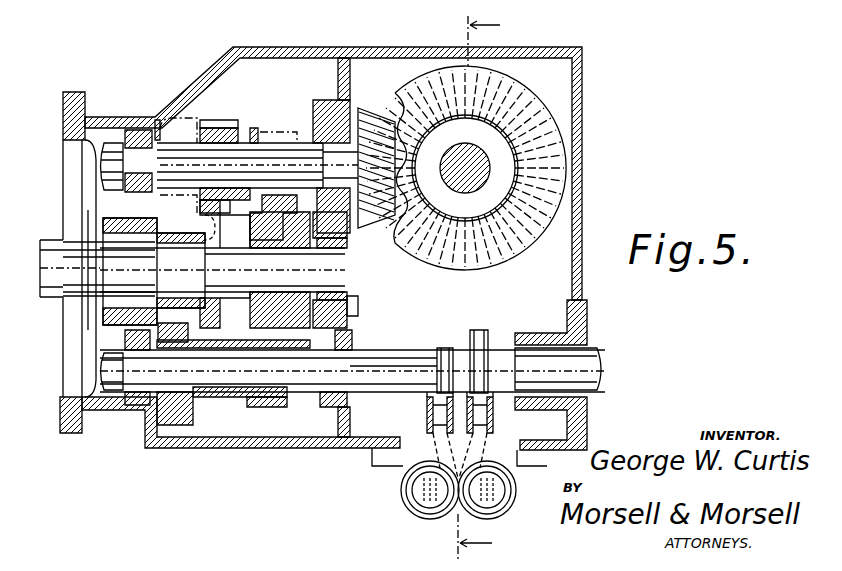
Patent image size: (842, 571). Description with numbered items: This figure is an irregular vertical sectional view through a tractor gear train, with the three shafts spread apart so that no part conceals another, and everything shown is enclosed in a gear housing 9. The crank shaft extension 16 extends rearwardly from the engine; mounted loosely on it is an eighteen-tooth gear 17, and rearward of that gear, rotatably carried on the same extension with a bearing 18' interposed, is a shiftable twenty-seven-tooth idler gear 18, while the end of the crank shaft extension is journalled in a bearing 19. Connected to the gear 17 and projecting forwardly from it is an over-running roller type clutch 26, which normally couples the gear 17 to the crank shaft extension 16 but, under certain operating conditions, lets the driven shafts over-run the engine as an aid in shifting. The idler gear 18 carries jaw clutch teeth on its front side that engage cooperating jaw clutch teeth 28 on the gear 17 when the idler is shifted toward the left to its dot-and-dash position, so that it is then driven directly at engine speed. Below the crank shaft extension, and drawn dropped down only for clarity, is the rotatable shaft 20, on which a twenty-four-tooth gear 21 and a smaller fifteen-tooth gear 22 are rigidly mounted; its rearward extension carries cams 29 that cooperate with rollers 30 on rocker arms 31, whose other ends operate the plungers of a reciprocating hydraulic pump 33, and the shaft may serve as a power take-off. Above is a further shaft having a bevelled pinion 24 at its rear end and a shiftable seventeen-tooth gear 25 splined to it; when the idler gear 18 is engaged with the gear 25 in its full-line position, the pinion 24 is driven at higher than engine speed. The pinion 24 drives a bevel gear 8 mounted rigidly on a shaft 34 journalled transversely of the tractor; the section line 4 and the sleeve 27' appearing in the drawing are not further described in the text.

The section line 4- 4 is at (468, 288).
The bevel gear 8 is at (530, 96).
The gear housing 9 is at (268, 50).
The crank shaft extension 16 is at (58, 298).
The 18-tooth gear 17 is at (352, 368).
The shiftable 27-tooth idler gear 18 is at (222, 264).
The bearing 18' is at (330, 270).
The bearing 19 is at (348, 306).
The rotatable shaft 20 is at (300, 442).
The 24-tooth gear 21 is at (180, 427).
The 15-tooth gear 22 is at (270, 408).
The bevelled pinion 24 is at (372, 110).
The 17-tooth gear 25 is at (214, 118).
The over-running roller type clutch 26 is at (118, 320).
The sleeve 27' is at (157, 278).
The jaw clutch teeth 28 is at (126, 200).
The cams 29 is at (274, 150).
The rollers 30 is at (395, 410).
The rocker arms 31 is at (412, 477).
The reciprocating hydraulic pump 33 is at (457, 508).
The shaft 34 is at (465, 168).